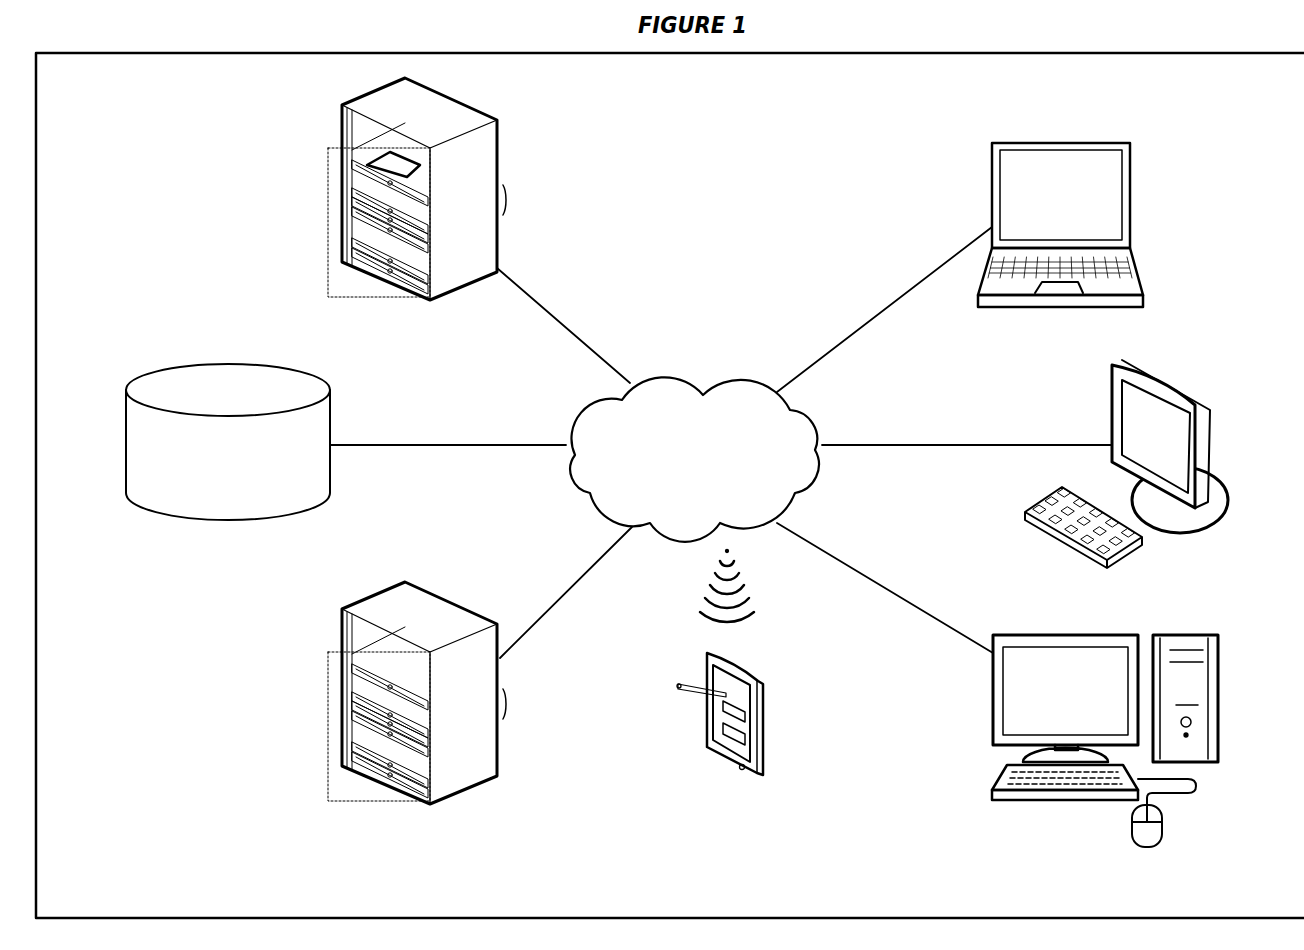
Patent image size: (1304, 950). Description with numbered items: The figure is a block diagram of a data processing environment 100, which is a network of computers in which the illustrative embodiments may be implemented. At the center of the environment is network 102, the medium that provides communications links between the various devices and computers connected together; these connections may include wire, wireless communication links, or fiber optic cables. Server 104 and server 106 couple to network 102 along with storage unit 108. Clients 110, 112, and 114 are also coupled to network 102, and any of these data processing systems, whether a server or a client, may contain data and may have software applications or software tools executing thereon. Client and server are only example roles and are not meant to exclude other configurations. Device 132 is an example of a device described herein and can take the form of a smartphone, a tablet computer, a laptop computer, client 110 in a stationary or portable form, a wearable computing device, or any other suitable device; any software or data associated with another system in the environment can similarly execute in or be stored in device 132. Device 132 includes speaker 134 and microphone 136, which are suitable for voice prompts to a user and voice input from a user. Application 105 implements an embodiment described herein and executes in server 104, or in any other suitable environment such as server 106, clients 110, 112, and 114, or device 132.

The data processing environment 100 is at (85, 93).
The network 102 is at (708, 480).
The server 104 is at (445, 321).
The application 105 is at (430, 177).
The server 106 is at (445, 830).
The storage unit 108 is at (243, 471).
The client 110 is at (1252, 556).
The client 112 is at (1115, 696).
The client 114 is at (1112, 203).
The device 132 is at (728, 685).
The speaker 134 is at (797, 715).
The microphone 136 is at (652, 740).